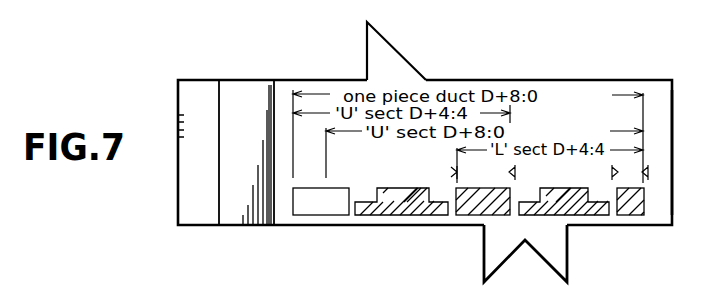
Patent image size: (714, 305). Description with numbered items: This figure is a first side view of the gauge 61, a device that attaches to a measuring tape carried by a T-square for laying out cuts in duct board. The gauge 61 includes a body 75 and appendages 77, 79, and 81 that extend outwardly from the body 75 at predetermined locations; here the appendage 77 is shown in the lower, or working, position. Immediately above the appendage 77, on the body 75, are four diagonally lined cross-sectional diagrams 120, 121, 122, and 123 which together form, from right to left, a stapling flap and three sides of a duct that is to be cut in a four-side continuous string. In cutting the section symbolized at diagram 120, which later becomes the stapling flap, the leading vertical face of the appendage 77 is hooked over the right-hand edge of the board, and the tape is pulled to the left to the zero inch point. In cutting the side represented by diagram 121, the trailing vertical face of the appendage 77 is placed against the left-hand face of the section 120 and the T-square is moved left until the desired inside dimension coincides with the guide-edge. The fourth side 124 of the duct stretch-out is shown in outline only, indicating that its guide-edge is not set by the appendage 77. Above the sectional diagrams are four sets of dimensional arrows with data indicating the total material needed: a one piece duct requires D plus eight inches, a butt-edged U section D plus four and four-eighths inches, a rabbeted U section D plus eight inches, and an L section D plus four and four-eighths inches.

The gauge 61 is at (541, 72).
The body 75 is at (660, 173).
The appendage 77 is at (500, 253).
The appendage 79 is at (390, 45).
The appendage 81 is at (240, 213).
The cross-sectional diagram 120 is at (633, 208).
The cross-sectional diagram 121 is at (575, 208).
The cross-sectional diagram 122 is at (475, 207).
The cross-sectional diagram 123 is at (405, 207).
The fourth side 124 is at (298, 208).